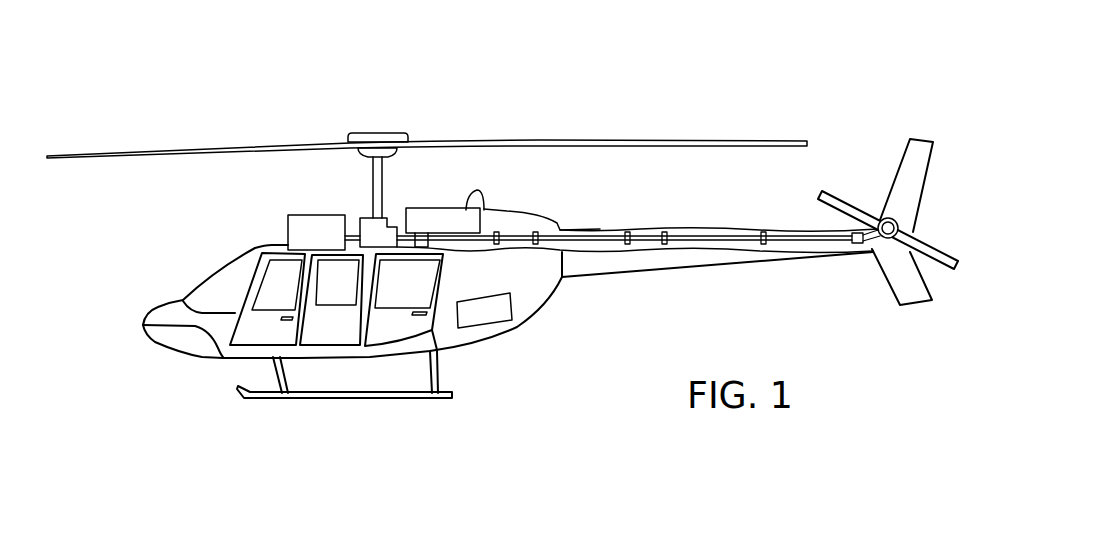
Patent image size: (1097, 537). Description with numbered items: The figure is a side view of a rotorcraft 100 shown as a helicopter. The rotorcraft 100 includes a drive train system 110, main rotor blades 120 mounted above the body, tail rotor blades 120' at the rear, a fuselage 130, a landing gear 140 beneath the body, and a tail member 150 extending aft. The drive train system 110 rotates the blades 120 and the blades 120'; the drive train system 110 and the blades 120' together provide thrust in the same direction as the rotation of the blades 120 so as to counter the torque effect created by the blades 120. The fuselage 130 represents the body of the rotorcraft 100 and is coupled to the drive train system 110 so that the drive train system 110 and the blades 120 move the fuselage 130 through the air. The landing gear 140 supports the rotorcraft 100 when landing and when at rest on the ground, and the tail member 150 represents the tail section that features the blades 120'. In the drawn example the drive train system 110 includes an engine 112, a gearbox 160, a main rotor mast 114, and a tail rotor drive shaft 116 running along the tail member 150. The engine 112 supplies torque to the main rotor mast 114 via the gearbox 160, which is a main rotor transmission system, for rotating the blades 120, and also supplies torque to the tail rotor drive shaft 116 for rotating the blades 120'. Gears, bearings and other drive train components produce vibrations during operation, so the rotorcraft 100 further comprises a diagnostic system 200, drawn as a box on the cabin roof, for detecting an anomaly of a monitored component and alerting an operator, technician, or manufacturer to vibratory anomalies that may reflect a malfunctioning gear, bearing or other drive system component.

The rotorcraft 100 is at (227, 72).
The drive train system 110 is at (402, 117).
The engine 112 is at (490, 213).
The main rotor mast 114 is at (383, 190).
The tail rotor drive shaft 116 is at (713, 235).
The main rotor blades 120 is at (427, 122).
The tail rotor blades 120' is at (888, 206).
The fuselage 130 is at (488, 340).
The landing gear 140 is at (330, 397).
The tail member 150 is at (650, 269).
The gearbox 160 is at (363, 208).
The diagnostic system 200 is at (288, 224).